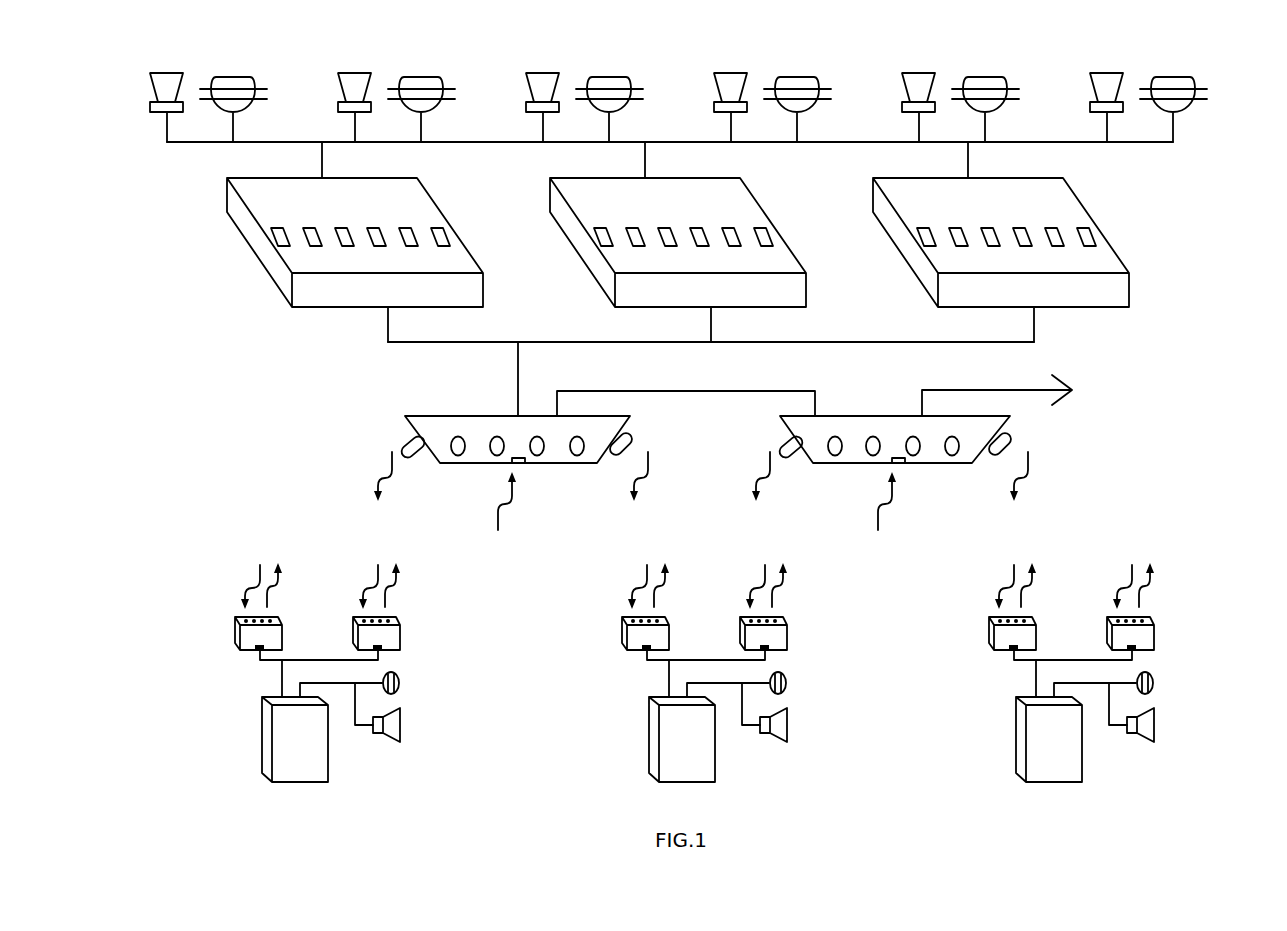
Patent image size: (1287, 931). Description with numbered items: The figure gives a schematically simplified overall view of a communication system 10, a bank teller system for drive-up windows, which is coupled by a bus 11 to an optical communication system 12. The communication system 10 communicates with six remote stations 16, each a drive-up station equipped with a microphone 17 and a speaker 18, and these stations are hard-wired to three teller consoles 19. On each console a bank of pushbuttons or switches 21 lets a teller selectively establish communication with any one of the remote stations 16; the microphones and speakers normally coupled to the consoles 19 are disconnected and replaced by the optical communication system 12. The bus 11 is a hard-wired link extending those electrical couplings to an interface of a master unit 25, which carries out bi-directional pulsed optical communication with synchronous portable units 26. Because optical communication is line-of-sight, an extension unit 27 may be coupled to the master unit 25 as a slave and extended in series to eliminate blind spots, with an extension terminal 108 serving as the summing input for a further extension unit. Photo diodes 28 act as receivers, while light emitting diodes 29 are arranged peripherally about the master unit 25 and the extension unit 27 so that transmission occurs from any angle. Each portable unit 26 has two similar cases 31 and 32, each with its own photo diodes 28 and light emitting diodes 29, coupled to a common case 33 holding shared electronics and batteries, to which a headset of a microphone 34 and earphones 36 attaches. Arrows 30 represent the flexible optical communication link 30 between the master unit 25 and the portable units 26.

The communication system 10 is at (240, 338).
The bus 11 is at (832, 342).
The optical communication system 12 is at (240, 395).
The remote stations 16 is at (684, 82).
The microphone 17 is at (255, 82).
The speaker 18 is at (156, 91).
The teller consoles 19 is at (668, 242).
The bank of pushbuttons or switches 21 is at (433, 232).
The master unit 25 is at (433, 416).
The portable units 26 is at (692, 724).
The extension unit 27 is at (840, 416).
The photo diodes 28 is at (520, 465).
The light emitting diodes 29 is at (627, 438).
The flexible communication link 30 is at (697, 530).
The case 31 is at (235, 637).
The case 32 is at (402, 645).
The common case 33 is at (262, 753).
The microphone 34 is at (403, 677).
The earphones 36 is at (402, 712).
The extension terminal 108 is at (1074, 391).